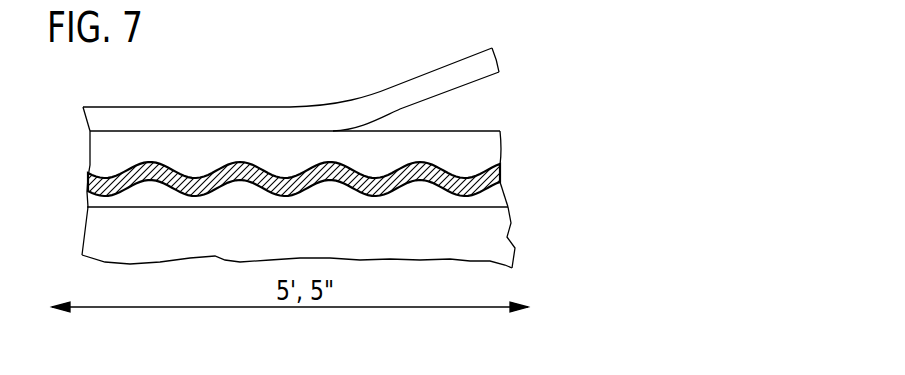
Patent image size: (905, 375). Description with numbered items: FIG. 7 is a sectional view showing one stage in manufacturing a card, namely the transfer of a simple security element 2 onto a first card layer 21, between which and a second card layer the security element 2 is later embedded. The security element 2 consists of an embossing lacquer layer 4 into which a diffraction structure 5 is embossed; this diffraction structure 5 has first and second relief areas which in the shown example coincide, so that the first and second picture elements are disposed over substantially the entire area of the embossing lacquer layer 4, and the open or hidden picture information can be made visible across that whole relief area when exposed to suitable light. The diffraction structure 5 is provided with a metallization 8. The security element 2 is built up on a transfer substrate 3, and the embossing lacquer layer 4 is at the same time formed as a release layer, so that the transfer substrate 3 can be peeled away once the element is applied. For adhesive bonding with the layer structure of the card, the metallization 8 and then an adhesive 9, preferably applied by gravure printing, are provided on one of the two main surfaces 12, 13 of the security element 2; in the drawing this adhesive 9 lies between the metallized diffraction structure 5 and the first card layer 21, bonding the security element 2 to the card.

The security element 2 is at (75, 132).
The transfer substrate 3 is at (478, 65).
The embossing lacquer layer 4 is at (488, 142).
The diffraction structure 5 is at (498, 167).
The metallization 8 is at (500, 173).
The adhesive 9 is at (500, 192).
The main surface 12 is at (118, 203).
The main surface 13 is at (481, 122).
The first card layer 21 is at (502, 253).